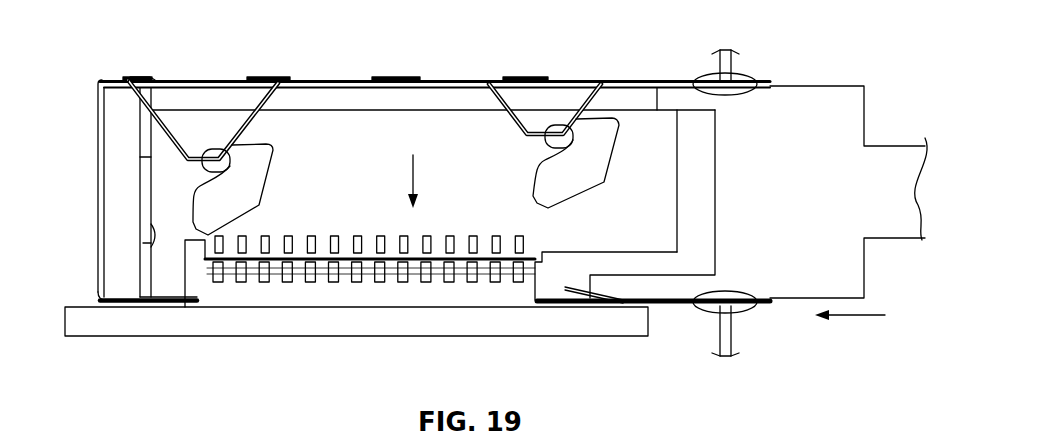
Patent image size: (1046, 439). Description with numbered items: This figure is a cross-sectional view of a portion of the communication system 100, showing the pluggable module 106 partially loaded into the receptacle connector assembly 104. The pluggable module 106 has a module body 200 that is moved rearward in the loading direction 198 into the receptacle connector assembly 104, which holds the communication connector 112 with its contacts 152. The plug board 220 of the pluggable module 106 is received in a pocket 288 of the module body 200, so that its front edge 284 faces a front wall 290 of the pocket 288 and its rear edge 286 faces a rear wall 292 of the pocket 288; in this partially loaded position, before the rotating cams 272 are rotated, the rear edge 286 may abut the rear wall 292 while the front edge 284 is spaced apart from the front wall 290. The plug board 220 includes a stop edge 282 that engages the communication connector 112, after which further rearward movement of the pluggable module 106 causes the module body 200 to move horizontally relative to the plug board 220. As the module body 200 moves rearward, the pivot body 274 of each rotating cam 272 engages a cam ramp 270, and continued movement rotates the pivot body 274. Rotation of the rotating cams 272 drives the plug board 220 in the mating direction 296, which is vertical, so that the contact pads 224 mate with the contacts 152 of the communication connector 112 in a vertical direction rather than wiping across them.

The communication system 100 is at (712, 438).
The receptacle connector assembly 104 is at (84, 95).
The pluggable module 106 is at (855, 75).
The communication connector 112 is at (314, 292).
The contacts 152 is at (357, 273).
The loading direction 198 is at (860, 318).
The module body 200 is at (790, 117).
The plug board 220 is at (337, 136).
The contact pads 224 is at (380, 243).
The cam ramps 270 is at (242, 120).
The rotating cams 272 is at (257, 170).
The pivot body 274 is at (563, 173).
The stop edge 282 is at (203, 237).
The front edge 284 is at (681, 172).
The rear edge 286 is at (147, 182).
The pocket 288 is at (690, 244).
The front wall 290 is at (707, 180).
The rear wall 292 is at (149, 246).
The mating direction 296 is at (417, 172).